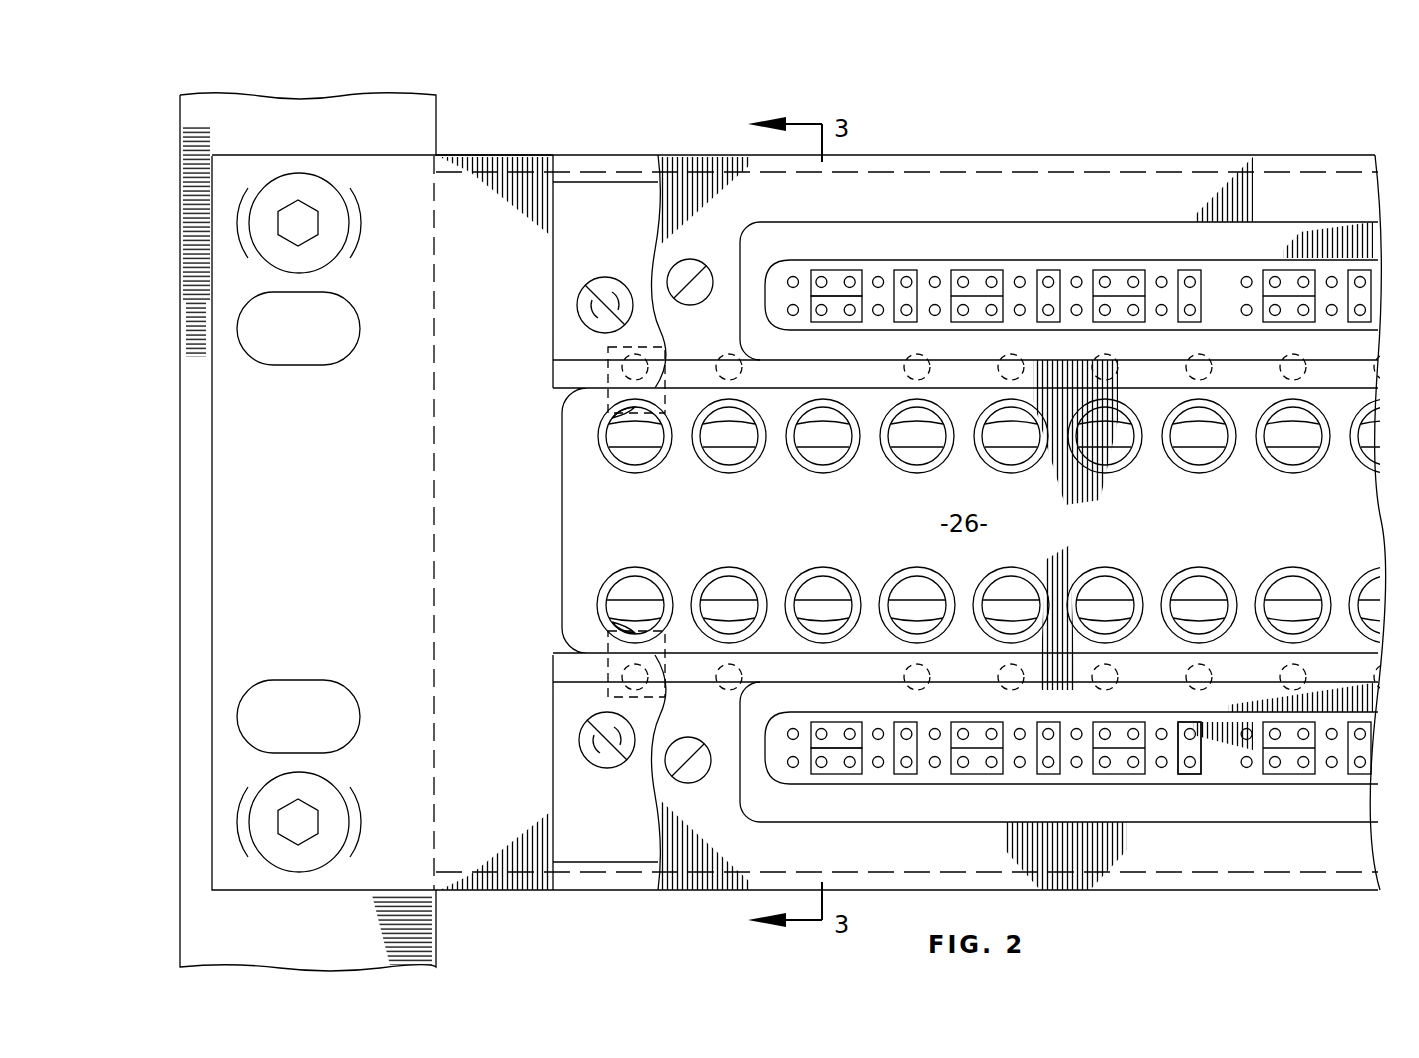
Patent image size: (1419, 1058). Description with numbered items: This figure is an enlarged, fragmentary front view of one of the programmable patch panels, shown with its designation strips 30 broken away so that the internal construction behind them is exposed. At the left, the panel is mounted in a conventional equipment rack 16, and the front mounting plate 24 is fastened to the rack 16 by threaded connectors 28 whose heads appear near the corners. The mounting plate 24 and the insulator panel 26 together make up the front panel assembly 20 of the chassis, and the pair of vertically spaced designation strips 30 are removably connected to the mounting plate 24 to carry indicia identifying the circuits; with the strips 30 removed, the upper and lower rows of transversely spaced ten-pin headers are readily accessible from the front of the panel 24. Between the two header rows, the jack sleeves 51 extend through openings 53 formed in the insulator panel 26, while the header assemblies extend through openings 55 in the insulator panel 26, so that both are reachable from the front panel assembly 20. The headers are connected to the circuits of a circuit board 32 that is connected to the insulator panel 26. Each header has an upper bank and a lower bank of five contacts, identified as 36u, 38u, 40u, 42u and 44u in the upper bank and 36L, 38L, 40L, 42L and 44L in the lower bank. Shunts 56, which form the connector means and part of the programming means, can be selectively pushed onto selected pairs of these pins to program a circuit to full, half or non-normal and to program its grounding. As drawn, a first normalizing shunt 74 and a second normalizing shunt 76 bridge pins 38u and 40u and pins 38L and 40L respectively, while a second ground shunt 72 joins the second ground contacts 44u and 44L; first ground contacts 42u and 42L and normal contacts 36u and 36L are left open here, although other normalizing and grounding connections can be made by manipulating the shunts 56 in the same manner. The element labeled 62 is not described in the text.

The equipment rack 16 is at (308, 532).
The front panel assembly 20 is at (562, 138).
The front mounting plate 24 is at (1200, 906).
The insulator panel 26 is at (1306, 223).
The threaded connectors 28 is at (332, 236).
The designation strips 30 is at (560, 242).
The circuit board 32 is at (1236, 273).
The first normal contact 36u is at (790, 278).
The second normal contact 36L is at (791, 315).
The first normal contact 38u is at (823, 276).
The second normal contact 38L is at (824, 316).
The upper bank contact 40u is at (850, 276).
The lower bank contact 40L is at (850, 316).
The first ground contact 42u is at (879, 276).
The first ground contact 42L is at (878, 316).
The second ground contact 44u is at (907, 276).
The second ground contact 44L is at (906, 316).
The jack sleeves 51 is at (636, 473).
The openings 53 is at (620, 418).
The openings 55 is at (1154, 273).
The shunts 56 is at (1112, 268).
The screw head 62 is at (651, 571).
The second ground shunt 72 is at (921, 276).
The first normalizing shunt 74 is at (811, 270).
The second normalizing shunt 76 is at (812, 325).